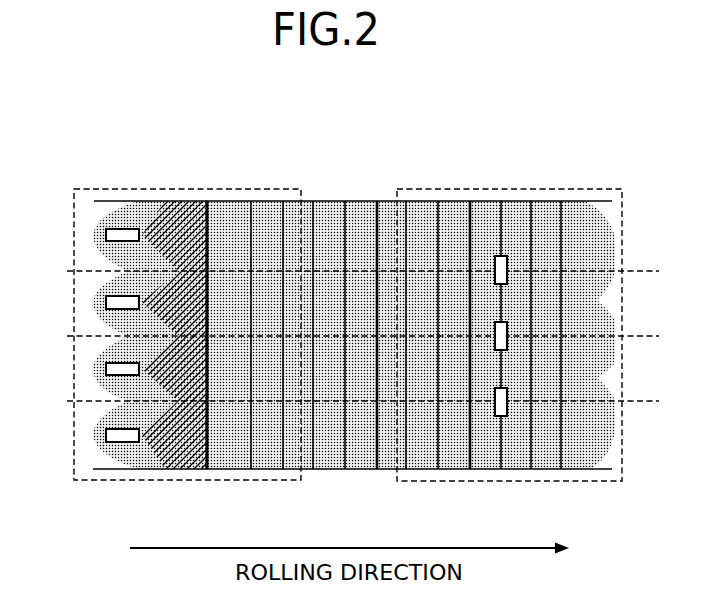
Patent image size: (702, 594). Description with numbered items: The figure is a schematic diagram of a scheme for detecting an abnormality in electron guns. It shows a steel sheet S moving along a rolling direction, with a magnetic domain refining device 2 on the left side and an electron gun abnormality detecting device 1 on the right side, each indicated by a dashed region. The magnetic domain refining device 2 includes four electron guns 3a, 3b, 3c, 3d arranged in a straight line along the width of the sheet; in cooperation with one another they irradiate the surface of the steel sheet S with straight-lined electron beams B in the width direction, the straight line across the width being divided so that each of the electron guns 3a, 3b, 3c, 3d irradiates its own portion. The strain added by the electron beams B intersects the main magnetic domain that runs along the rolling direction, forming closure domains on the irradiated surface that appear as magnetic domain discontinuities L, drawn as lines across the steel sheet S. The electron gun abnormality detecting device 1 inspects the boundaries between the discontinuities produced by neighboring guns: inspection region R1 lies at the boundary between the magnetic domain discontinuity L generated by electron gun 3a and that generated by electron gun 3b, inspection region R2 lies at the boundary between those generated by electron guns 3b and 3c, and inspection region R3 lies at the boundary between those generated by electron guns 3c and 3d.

The electron gun abnormality detecting device 1 is at (427, 189).
The magnetic domain refining device 2 is at (253, 189).
The electron gun 3a is at (106, 235).
The electron gun 3b is at (106, 302).
The electron gun 3c is at (106, 369).
The electron gun 3d is at (106, 435).
The electron beam B is at (172, 216).
The magnetic domain discontinuity L is at (372, 201).
The inspection region R1 is at (505, 257).
The inspection region R2 is at (507, 343).
The inspection region R3 is at (507, 408).
The steel sheet S is at (575, 432).